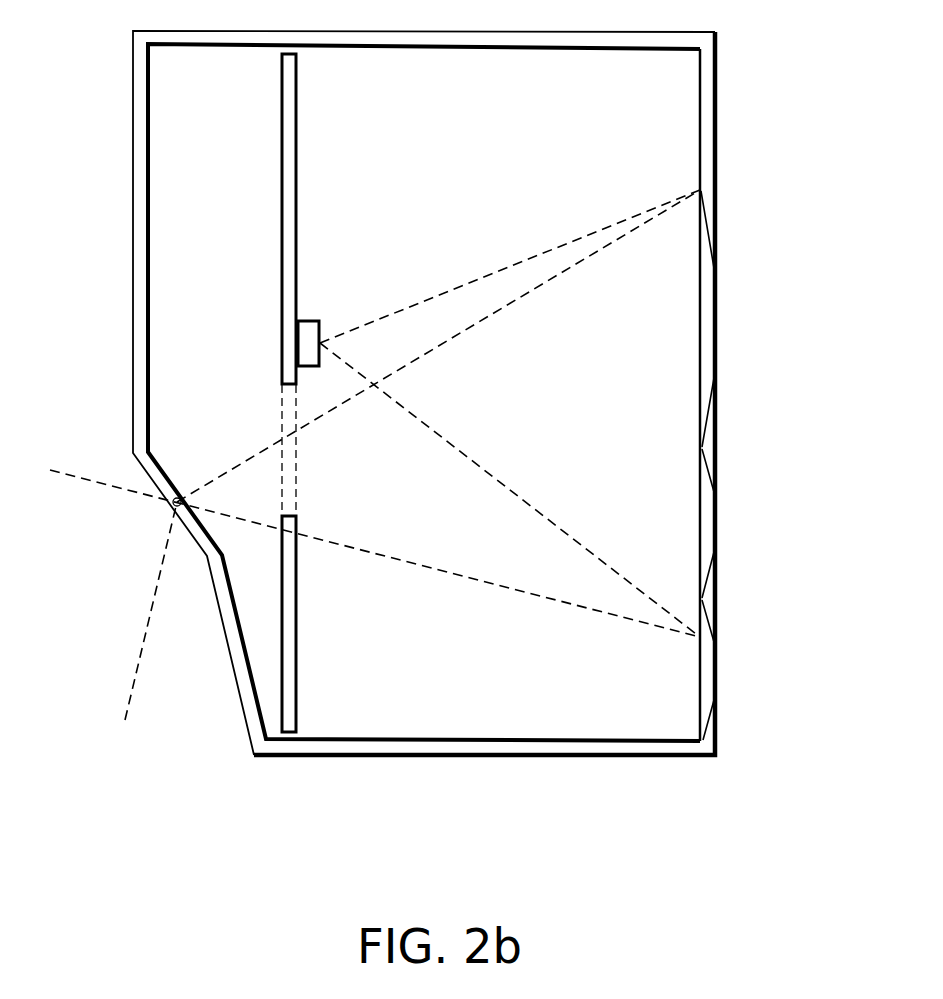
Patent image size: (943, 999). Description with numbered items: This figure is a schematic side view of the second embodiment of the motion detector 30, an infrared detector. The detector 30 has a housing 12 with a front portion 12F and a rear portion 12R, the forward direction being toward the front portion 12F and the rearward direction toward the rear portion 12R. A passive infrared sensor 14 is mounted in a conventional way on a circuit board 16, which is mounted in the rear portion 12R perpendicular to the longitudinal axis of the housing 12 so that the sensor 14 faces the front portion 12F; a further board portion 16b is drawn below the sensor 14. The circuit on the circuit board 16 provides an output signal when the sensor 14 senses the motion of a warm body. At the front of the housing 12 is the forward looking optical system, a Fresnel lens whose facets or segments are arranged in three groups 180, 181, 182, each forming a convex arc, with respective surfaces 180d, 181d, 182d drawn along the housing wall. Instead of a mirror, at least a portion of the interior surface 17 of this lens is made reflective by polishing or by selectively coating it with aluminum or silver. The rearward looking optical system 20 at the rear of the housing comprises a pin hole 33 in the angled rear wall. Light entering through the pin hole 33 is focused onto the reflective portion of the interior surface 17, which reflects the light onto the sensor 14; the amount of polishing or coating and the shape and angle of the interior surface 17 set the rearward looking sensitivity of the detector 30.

The housing 12 is at (547, 750).
The rear portion 12R is at (340, 115).
The front portion 12F is at (486, 157).
The passive infrared sensor 14 is at (305, 328).
The circuit board 16 is at (293, 190).
The lower baffle plate 16b is at (288, 505).
The interior surface 17 is at (650, 426).
The rearward looking optical system 20 is at (140, 546).
The detector 30 is at (338, 790).
The pin hole 33 is at (176, 497).
The group of facets or segments 180 is at (770, 307).
The reflecting surface of first reflector segment 180d is at (714, 361).
The group of facets or segments 181 is at (752, 497).
The reflecting surface of second reflector segment 181d is at (716, 557).
The group of facets or segments 182 is at (743, 652).
The reflecting surface of third reflector segment 182d is at (715, 702).